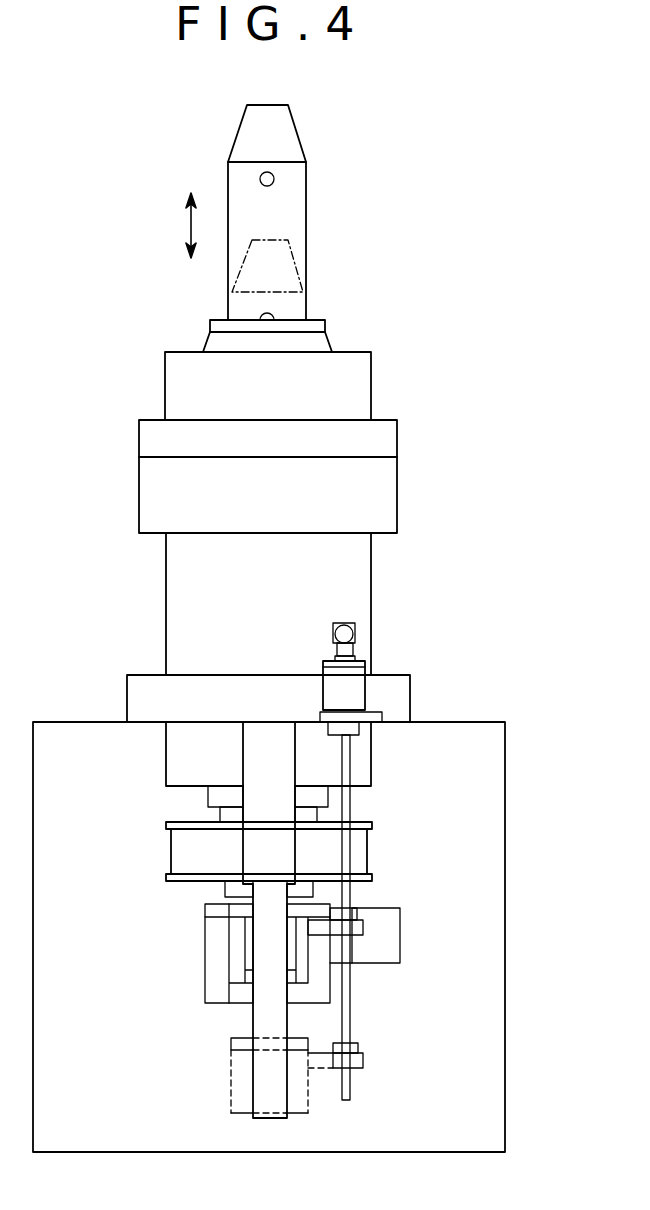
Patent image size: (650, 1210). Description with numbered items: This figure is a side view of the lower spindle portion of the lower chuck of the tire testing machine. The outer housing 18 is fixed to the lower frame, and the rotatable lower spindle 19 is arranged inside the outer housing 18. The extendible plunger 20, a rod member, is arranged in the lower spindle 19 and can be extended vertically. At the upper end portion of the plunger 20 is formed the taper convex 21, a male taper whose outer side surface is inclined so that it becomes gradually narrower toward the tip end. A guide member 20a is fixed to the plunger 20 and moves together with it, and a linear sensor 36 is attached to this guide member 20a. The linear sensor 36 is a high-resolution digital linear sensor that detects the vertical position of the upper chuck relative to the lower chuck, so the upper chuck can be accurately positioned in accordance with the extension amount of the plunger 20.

The taper convex 21 is at (285, 137).
The plunger 20 is at (293, 207).
The lower spindle 19 is at (357, 387).
The outer housing 18 is at (357, 565).
The linear sensor 36 is at (348, 690).
The guide member 20a is at (275, 1020).